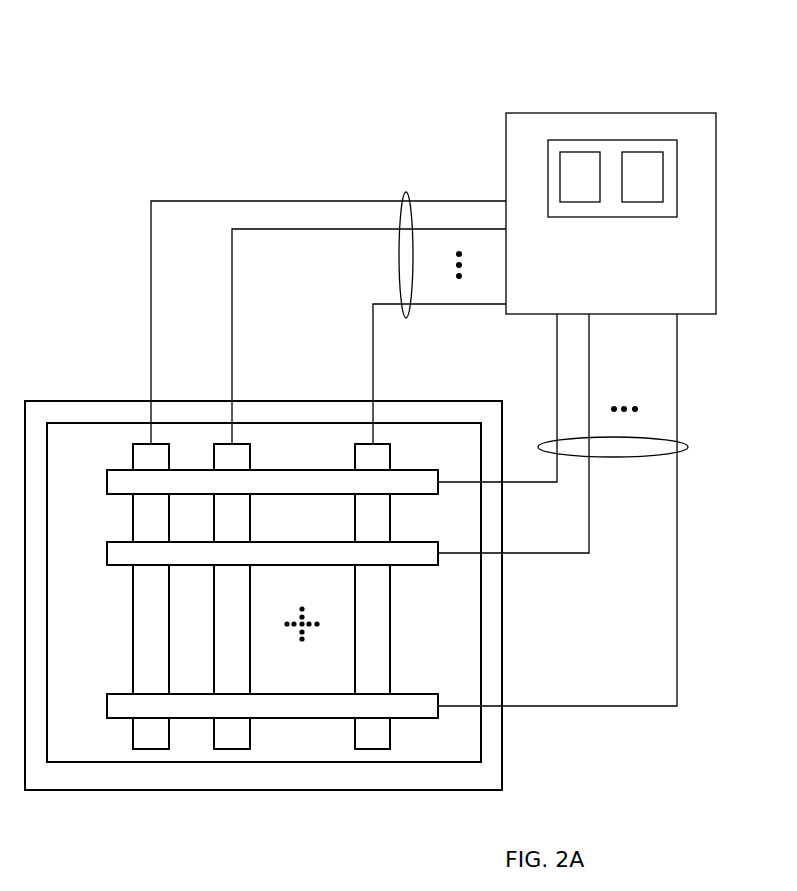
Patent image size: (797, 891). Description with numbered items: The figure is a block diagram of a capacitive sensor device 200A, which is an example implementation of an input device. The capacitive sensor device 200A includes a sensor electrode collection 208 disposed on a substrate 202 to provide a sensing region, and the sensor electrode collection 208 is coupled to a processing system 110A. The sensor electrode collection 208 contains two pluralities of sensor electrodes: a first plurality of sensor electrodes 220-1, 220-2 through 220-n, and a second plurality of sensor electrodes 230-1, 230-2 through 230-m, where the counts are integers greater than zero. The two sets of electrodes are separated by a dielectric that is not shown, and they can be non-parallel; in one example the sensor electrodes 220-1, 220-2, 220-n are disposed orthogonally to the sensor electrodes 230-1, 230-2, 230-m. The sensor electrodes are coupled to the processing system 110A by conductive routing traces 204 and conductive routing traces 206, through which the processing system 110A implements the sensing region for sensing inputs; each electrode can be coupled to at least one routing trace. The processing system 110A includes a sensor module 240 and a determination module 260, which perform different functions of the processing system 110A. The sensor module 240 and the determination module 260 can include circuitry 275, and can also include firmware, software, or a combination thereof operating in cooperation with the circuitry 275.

The capacitive sensor device 200A is at (116, 64).
The substrate 202 is at (92, 792).
The conductive routing traces 204 is at (404, 195).
The conductive routing traces 206 is at (688, 447).
The sensor electrode collection 208 is at (168, 764).
The sensor electrode 220-1 is at (124, 470).
The sensor electrode 220-2 is at (403, 542).
The sensor electrode 220-n is at (285, 694).
The sensor electrode 230-1 is at (133, 734).
The sensor electrode 230-2 is at (250, 740).
The sensor electrode 230-m is at (390, 736).
The processing system 110A is at (611, 192).
The circuitry 275 is at (567, 140).
The sensor module 240 is at (580, 177).
The determination module 260 is at (642, 177).